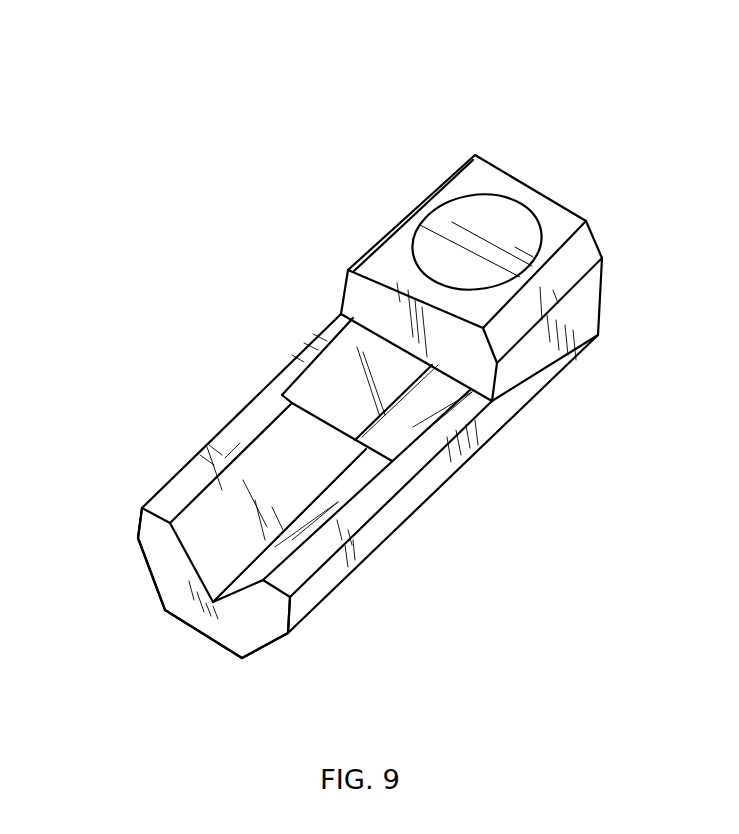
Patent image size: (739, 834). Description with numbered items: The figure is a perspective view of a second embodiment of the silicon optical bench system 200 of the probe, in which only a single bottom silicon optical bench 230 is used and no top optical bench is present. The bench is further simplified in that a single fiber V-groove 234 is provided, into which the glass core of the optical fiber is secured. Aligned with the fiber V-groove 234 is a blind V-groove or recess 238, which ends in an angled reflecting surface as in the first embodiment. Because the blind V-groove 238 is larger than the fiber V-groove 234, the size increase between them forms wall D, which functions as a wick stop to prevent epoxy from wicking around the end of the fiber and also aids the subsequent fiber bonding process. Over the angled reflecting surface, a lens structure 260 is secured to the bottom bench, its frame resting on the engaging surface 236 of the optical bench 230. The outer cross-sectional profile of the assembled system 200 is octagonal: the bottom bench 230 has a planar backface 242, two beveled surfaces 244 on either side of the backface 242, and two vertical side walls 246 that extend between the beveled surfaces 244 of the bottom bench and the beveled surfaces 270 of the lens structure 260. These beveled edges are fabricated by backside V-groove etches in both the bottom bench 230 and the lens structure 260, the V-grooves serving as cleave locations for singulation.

The silicon optical bench system 200 is at (558, 75).
The bottom silicon optical bench 230 is at (138, 548).
The fiber V-groove 234 is at (193, 503).
The engaging surface 236 is at (230, 430).
The blind V-groove 238 is at (347, 345).
The planar backface 242 is at (200, 632).
The beveled surfaces 244 is at (152, 575).
The vertical side walls 246 is at (142, 520).
The lens structure 260 is at (600, 287).
The beveled surfaces of lens structure 270 is at (403, 222).
The wall D is at (314, 410).